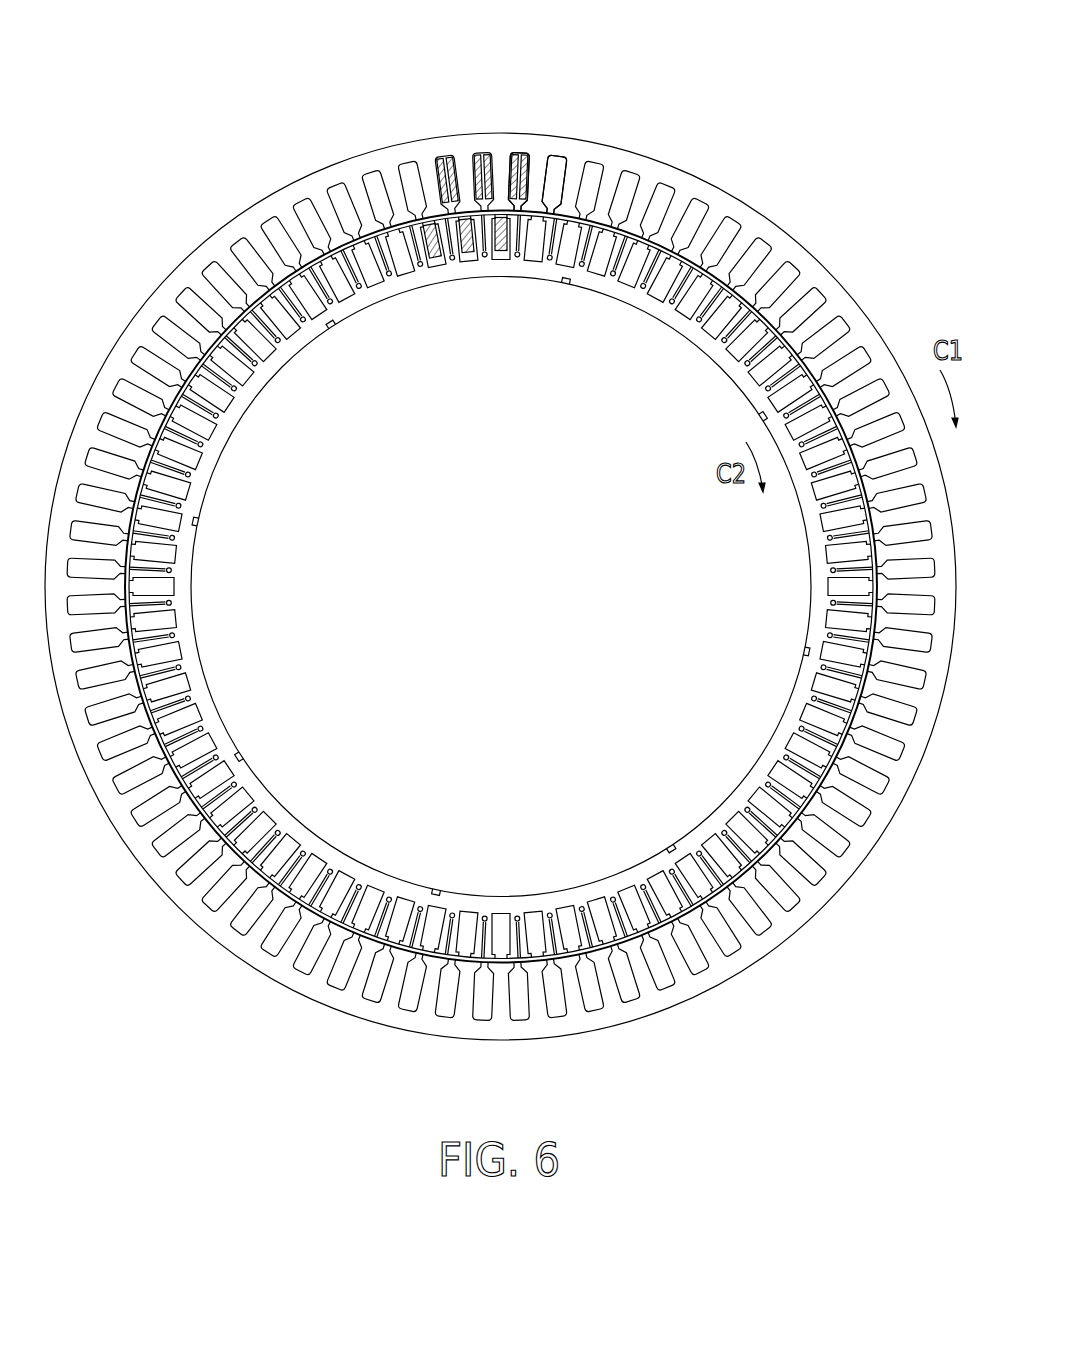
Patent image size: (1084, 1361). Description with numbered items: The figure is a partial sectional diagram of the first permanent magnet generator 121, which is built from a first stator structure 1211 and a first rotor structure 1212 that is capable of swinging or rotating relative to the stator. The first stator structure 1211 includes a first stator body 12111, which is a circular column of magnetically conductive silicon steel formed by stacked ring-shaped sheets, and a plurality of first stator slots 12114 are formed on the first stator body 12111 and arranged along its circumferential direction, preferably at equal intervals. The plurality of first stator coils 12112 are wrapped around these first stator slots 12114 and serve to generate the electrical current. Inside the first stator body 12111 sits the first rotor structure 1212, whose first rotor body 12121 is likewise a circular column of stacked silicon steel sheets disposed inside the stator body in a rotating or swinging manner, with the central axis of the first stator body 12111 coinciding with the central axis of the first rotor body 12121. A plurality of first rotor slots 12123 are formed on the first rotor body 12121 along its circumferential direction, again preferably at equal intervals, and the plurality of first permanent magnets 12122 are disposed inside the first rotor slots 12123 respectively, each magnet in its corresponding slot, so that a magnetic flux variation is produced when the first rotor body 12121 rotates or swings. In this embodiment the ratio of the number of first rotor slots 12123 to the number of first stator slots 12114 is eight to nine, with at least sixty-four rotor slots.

The first permanent magnet generator 121 is at (815, 87).
The first stator structure 1211 is at (725, 205).
The first stator body 12111 is at (633, 158).
The first stator coils 12112 is at (482, 148).
The first stator slots 12114 is at (516, 151).
The first rotor structure 1212 is at (705, 343).
The first rotor body 12121 is at (637, 293).
The first permanent magnets 12122 is at (504, 250).
The first rotor slots 12123 is at (444, 262).